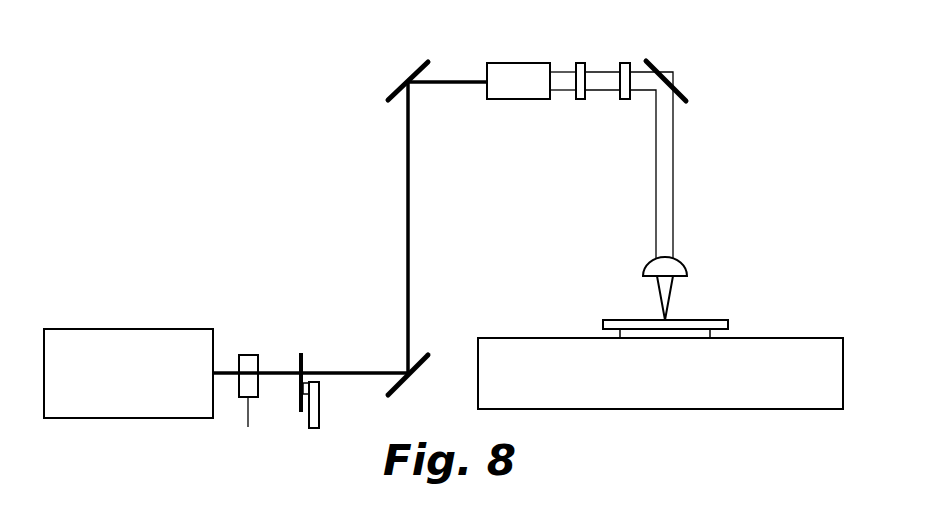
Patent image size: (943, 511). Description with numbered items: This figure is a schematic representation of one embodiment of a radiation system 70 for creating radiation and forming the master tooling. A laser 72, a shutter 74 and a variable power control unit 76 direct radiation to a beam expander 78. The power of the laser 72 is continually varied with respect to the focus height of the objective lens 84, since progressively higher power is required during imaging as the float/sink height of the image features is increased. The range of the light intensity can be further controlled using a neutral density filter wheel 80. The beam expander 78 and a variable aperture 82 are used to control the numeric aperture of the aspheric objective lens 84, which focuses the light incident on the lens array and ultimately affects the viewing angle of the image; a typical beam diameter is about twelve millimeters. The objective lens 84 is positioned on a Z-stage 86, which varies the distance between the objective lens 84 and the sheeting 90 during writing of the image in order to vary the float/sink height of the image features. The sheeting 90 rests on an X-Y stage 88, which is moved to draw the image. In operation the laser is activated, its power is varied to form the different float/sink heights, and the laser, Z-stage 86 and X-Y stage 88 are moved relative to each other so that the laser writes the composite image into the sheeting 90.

The radiation system 70 is at (684, 60).
The laser 72 is at (123, 329).
The shutter 74 is at (245, 355).
The variable power control unit 76 is at (300, 353).
The beam expander 78 is at (517, 63).
The neutral density filter wheel 80 is at (578, 63).
The variable aperture 82 is at (625, 63).
The aspheric objective lens 84 is at (681, 263).
The Z-stage 86 is at (646, 275).
The X-Y stage 88 is at (711, 337).
The sheeting 90 is at (728, 324).